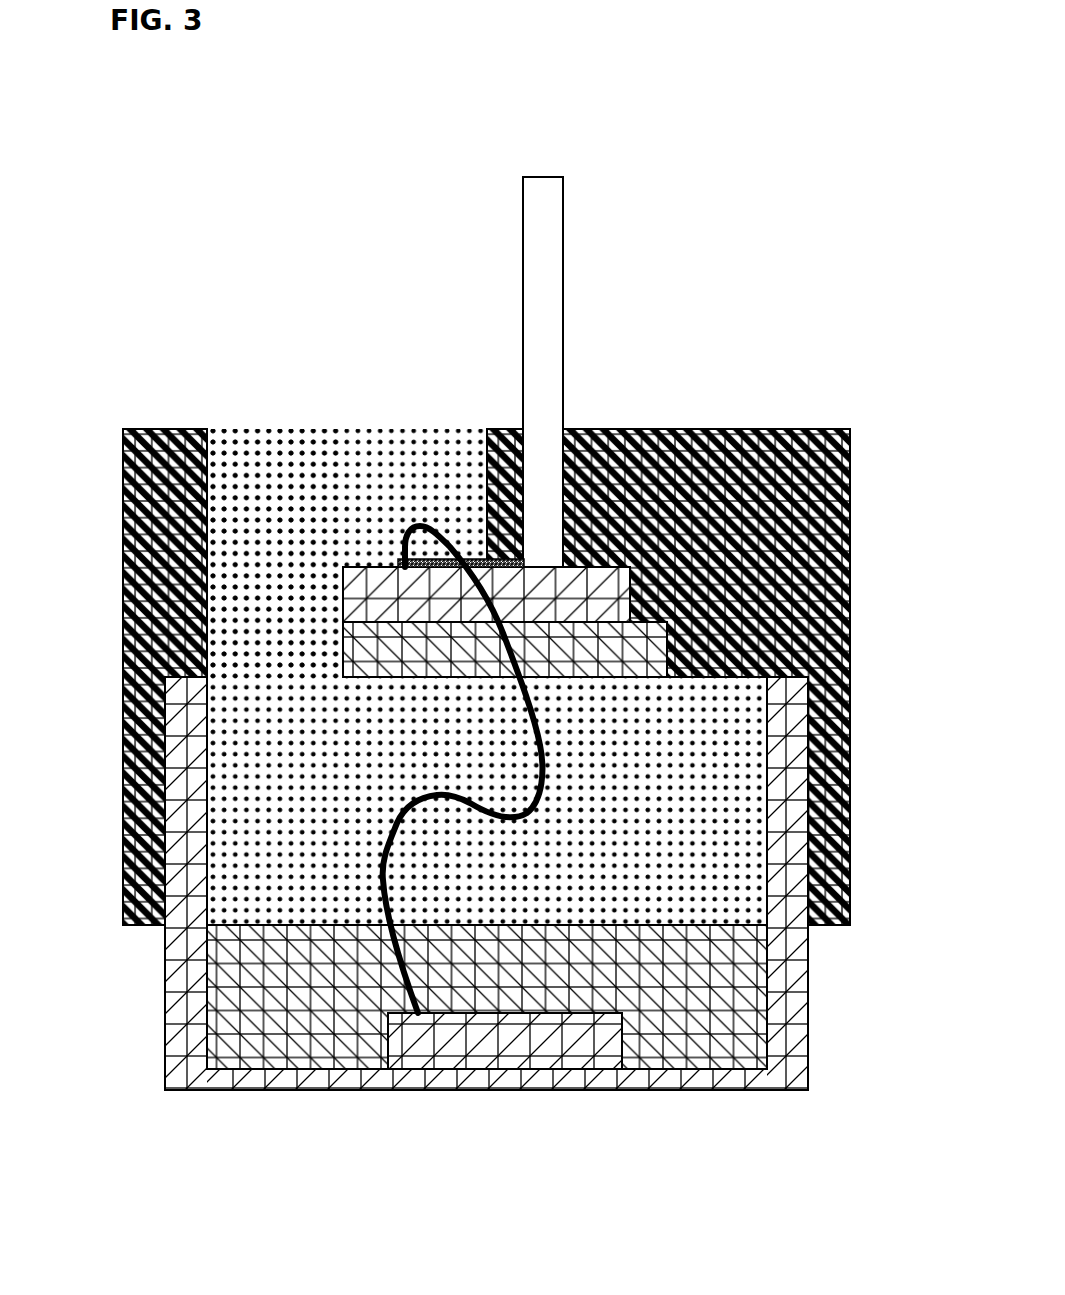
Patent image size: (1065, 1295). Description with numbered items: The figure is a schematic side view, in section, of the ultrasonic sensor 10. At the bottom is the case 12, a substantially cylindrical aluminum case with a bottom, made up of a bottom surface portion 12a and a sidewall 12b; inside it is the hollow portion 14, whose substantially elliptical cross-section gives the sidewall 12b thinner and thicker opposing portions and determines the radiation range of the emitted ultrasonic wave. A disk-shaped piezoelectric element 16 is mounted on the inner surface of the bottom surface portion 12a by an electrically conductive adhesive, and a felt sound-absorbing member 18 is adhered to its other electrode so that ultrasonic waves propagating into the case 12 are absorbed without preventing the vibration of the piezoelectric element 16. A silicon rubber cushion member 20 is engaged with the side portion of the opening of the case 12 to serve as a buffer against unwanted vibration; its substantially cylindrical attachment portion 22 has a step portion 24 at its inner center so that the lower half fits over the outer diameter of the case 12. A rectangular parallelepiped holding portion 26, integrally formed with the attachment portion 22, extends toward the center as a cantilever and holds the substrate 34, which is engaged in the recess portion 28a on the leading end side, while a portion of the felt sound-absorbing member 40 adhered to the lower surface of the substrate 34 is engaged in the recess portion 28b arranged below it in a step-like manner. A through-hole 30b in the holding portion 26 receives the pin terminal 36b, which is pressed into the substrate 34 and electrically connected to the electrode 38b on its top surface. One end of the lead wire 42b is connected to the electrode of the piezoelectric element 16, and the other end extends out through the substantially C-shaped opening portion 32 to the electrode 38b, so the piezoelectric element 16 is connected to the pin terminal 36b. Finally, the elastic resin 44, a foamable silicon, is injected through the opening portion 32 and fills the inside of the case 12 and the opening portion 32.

The ultrasonic sensor 10 is at (136, 81).
The case 12 is at (428, 926).
The bottom surface portion 12a is at (283, 1088).
The sidewall 12b is at (165, 1017).
The hollow portion 14 is at (717, 897).
The piezoelectric element 16 is at (515, 1058).
The sound-absorbing member 18 is at (665, 1035).
The cushion member 20 is at (120, 427).
The attachment portion 22 is at (157, 428).
The step portion 24 is at (197, 690).
The holding portion 26 is at (668, 430).
The recess portion 28a is at (588, 582).
The recess portion 28b is at (599, 637).
The through-hole 30b is at (556, 478).
The opening portion 32 is at (268, 462).
The substrate 34 is at (380, 567).
The pin terminal 36b is at (542, 183).
The electrode 38b is at (480, 560).
The sound-absorbing member 40 is at (343, 647).
The lead wire 42b is at (415, 559).
The elastic resin 44 is at (242, 462).